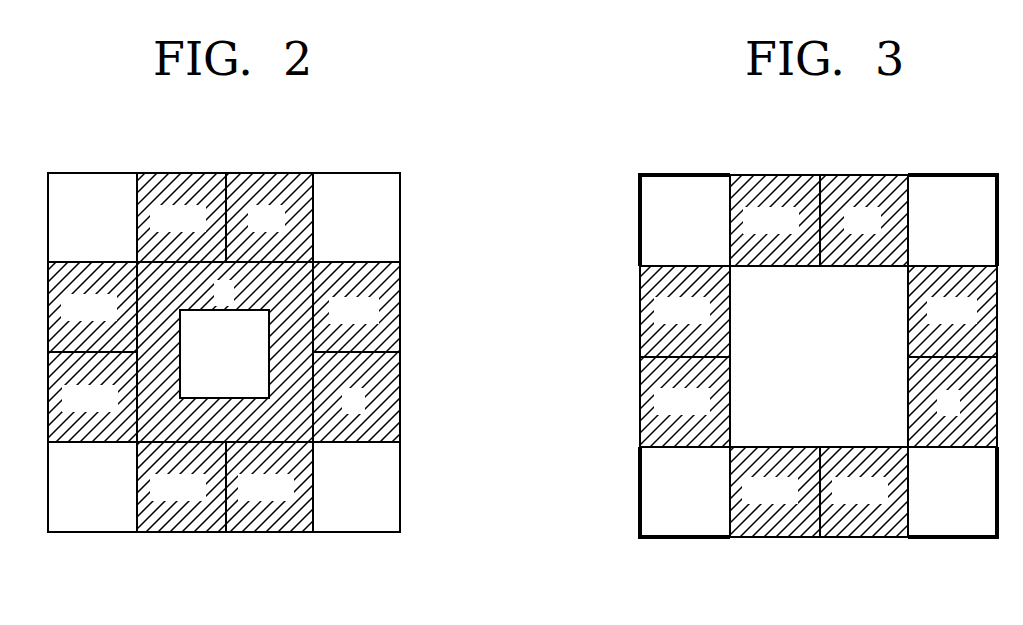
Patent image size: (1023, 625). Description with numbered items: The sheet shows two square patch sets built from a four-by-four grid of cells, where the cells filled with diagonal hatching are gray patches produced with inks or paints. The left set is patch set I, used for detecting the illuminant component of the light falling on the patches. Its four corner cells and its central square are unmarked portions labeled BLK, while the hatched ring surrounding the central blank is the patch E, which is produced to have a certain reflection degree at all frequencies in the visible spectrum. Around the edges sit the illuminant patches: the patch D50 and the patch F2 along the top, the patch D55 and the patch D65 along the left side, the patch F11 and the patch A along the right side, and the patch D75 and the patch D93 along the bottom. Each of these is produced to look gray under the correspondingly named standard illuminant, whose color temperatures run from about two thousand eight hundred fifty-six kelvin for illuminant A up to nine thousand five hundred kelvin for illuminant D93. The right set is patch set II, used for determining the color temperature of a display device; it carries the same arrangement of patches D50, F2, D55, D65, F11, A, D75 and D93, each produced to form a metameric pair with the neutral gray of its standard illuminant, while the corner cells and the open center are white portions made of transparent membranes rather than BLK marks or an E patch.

In FIG. 2, the unmarked portion BLK is at (224, 352).
In FIG. 2, the patch D50 is at (181, 217).
In FIG. 3, the patch D50 is at (775, 220).
In FIG. 2, the patch F2 is at (269, 217).
In FIG. 3, the patch F2 is at (864, 220).
In FIG. 2, the patch D55 is at (92, 307).
In FIG. 3, the patch D55 is at (685, 311).
In FIG. 2, the patch E is at (225, 352).
In FIG. 2, the patch F11 is at (356, 307).
In FIG. 3, the patch F11 is at (952, 311).
In FIG. 2, the patch D65 is at (92, 397).
In FIG. 3, the patch D65 is at (685, 402).
In FIG. 2, the patch A is at (356, 397).
In FIG. 3, the patch A is at (952, 402).
In FIG. 2, the patch D75 is at (181, 487).
In FIG. 3, the patch D75 is at (775, 492).
In FIG. 2, the patch D93 is at (269, 487).
In FIG. 3, the patch D93 is at (864, 492).